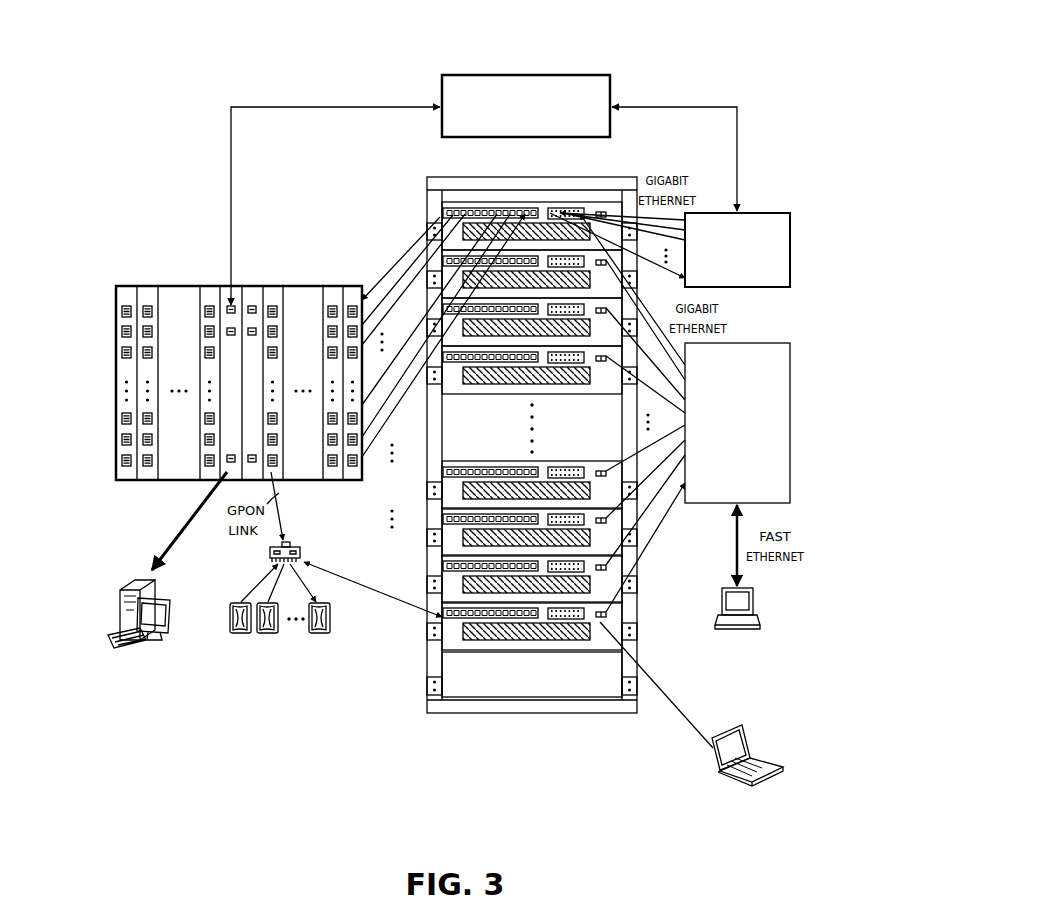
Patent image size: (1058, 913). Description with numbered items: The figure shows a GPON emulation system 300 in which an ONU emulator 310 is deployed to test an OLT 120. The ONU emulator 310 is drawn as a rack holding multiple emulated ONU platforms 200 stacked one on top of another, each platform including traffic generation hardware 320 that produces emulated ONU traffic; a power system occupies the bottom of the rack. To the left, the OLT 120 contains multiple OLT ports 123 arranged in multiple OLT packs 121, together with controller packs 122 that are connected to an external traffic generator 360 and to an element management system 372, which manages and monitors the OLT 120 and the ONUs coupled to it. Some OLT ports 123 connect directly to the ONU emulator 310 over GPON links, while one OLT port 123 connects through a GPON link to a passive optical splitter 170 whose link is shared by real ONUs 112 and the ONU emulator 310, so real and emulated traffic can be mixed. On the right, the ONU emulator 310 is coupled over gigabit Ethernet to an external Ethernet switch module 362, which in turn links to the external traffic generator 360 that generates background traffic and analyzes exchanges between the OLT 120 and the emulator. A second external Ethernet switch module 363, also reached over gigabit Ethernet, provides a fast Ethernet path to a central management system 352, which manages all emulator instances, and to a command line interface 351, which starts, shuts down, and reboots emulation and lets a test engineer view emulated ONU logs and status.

The GPON emulation system 300 is at (705, 55).
The external traffic generator 360 is at (600, 78).
The ONU emulator 310 is at (530, 470).
The traffic generation hardware 320 is at (518, 503).
The emulated ONU platform 200 is at (455, 633).
The OLT 120 is at (226, 386).
The OLT port 123 is at (116, 308).
The OLT pack 121 is at (127, 482).
The controller pack 122 is at (251, 290).
The external Ethernet switch module 362 is at (737, 250).
The external Ethernet switch module 363 is at (737, 423).
The element management system 372 is at (164, 604).
The passive optical splitter 170 is at (312, 543).
The real ONUs 112 is at (280, 640).
The central management system 352 is at (731, 631).
The command line interface (CLI) 351 is at (691, 726).